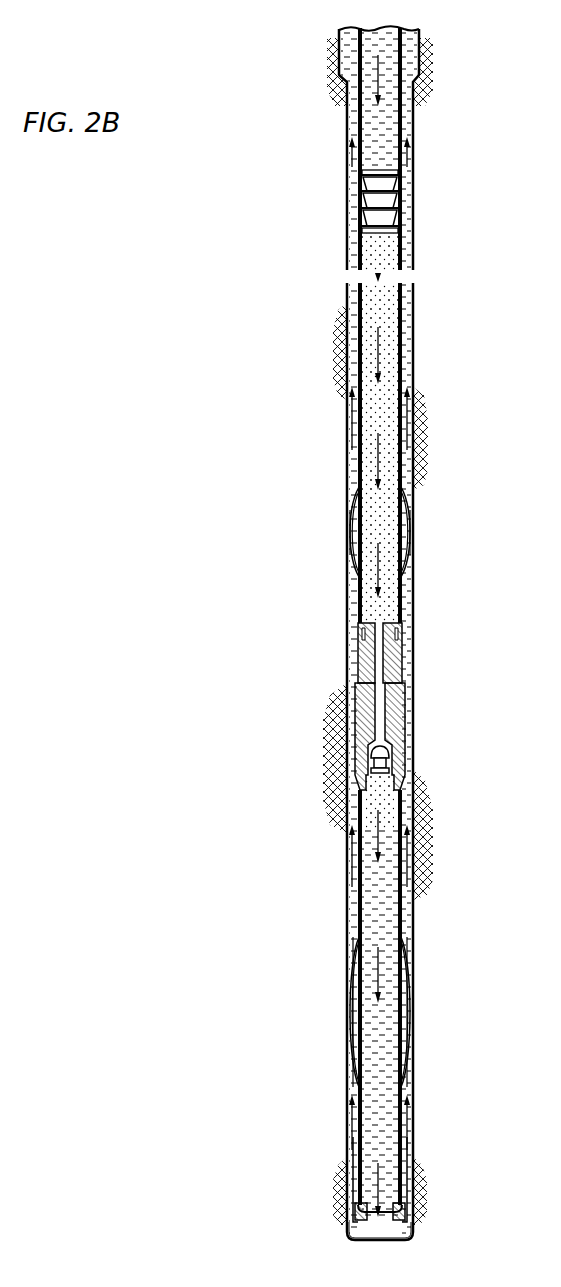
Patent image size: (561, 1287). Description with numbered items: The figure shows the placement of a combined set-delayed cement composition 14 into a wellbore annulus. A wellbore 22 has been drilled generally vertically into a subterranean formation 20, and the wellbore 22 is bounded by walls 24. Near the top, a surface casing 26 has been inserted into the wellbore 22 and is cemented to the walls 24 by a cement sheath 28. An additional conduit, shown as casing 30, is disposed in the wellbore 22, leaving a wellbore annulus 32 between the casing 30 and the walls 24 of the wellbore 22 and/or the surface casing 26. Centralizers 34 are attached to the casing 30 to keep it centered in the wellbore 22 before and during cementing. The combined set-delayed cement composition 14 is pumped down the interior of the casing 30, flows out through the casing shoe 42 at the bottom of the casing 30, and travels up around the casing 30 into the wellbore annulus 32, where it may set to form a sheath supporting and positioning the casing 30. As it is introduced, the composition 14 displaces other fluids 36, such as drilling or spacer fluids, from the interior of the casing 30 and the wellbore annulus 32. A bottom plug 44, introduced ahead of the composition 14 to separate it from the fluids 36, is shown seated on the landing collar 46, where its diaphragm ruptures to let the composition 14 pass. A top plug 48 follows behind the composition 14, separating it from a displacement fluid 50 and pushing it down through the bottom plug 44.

The combined set-delayed cement composition 14 is at (400, 349).
The subterranean formation 20 is at (514, 632).
The wellbore 22 is at (428, 477).
The walls 24 is at (407, 227).
The surface casing 26 is at (421, 32).
The cement sheath 28 is at (421, 56).
The casing 30 is at (405, 373).
The wellbore annulus 32 is at (355, 455).
The centralizers 34 is at (350, 990).
The fluids 36 is at (380, 810).
The casing shoe 42 is at (345, 1170).
The bottom plug 44 is at (360, 642).
The landing collar 46 is at (353, 710).
The top plug 48 is at (358, 217).
The displacement fluid 50 is at (378, 82).